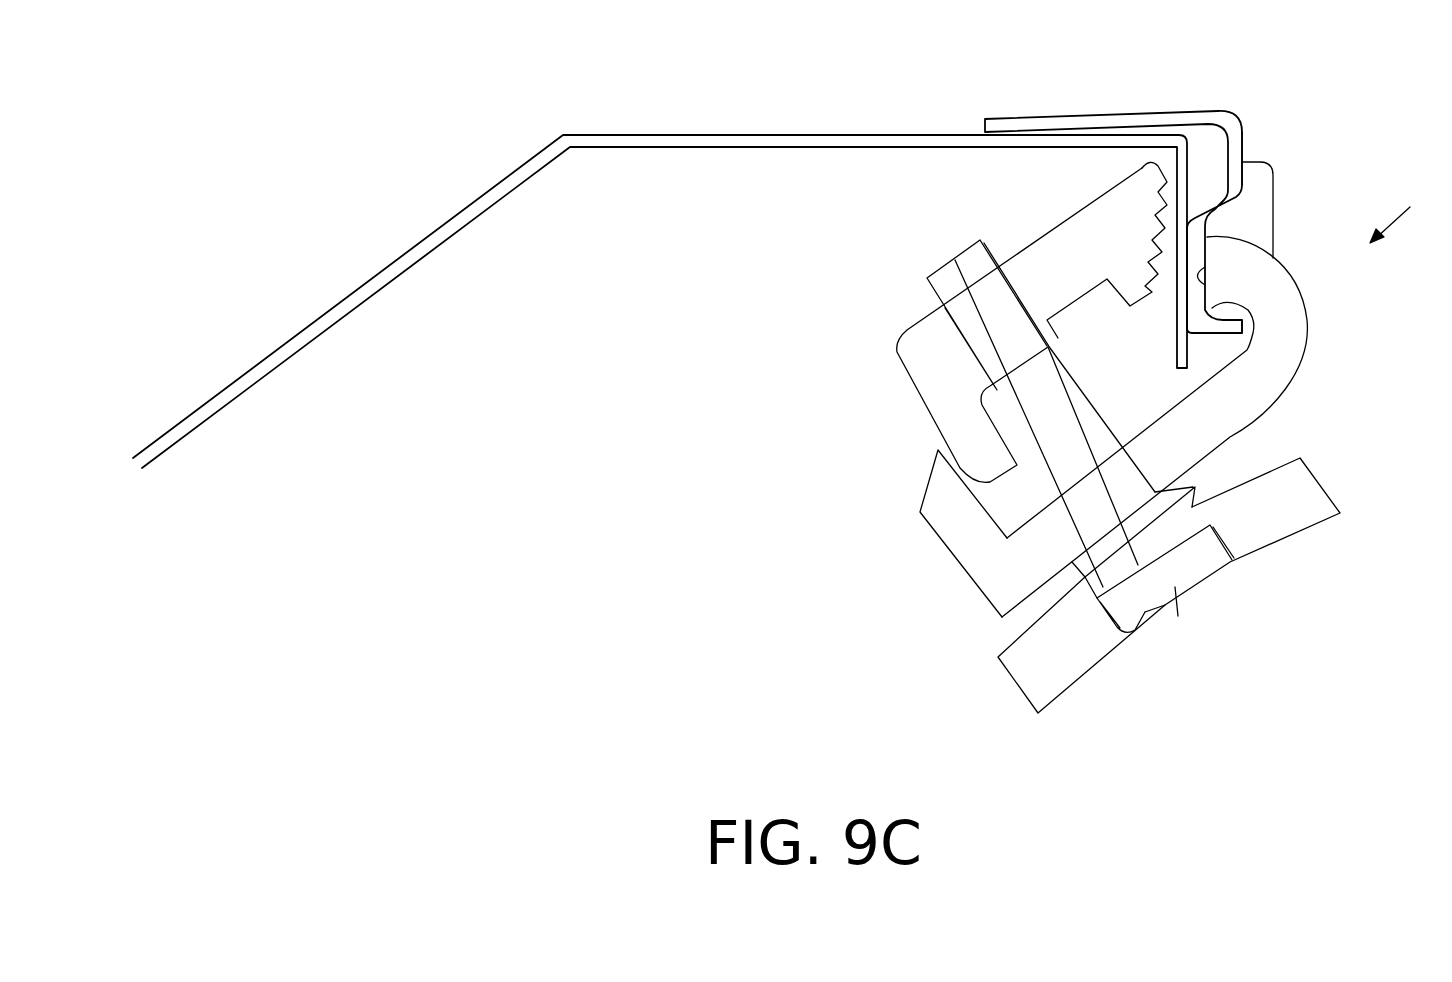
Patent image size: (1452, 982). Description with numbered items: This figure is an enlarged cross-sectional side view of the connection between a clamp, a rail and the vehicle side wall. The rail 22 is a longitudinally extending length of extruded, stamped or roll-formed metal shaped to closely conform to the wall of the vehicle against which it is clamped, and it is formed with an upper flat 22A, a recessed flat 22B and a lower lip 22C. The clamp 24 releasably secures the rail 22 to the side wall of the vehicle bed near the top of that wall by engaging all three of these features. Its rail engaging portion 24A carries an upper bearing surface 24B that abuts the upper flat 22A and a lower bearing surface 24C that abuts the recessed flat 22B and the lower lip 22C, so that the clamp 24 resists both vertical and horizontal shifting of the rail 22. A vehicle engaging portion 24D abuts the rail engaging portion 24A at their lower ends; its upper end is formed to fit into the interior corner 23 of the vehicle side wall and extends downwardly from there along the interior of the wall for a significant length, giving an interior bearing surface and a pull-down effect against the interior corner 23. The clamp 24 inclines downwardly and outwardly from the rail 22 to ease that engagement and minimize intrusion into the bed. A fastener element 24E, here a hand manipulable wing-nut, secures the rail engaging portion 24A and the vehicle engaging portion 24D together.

The rail 22 is at (1236, 124).
The upper flat 22A is at (1243, 157).
The recessed flat 22B is at (1205, 284).
The lower lip 22C is at (1245, 331).
The interior corner 23 is at (1168, 152).
The clamp 24 is at (1411, 219).
The rail engaging portion 24A is at (1248, 392).
The upper bearing surface 24B is at (1245, 182).
The lower bearing surface 24C is at (1210, 294).
The vehicle engaging portion 24D is at (1040, 265).
The fastener element 24E is at (1260, 528).